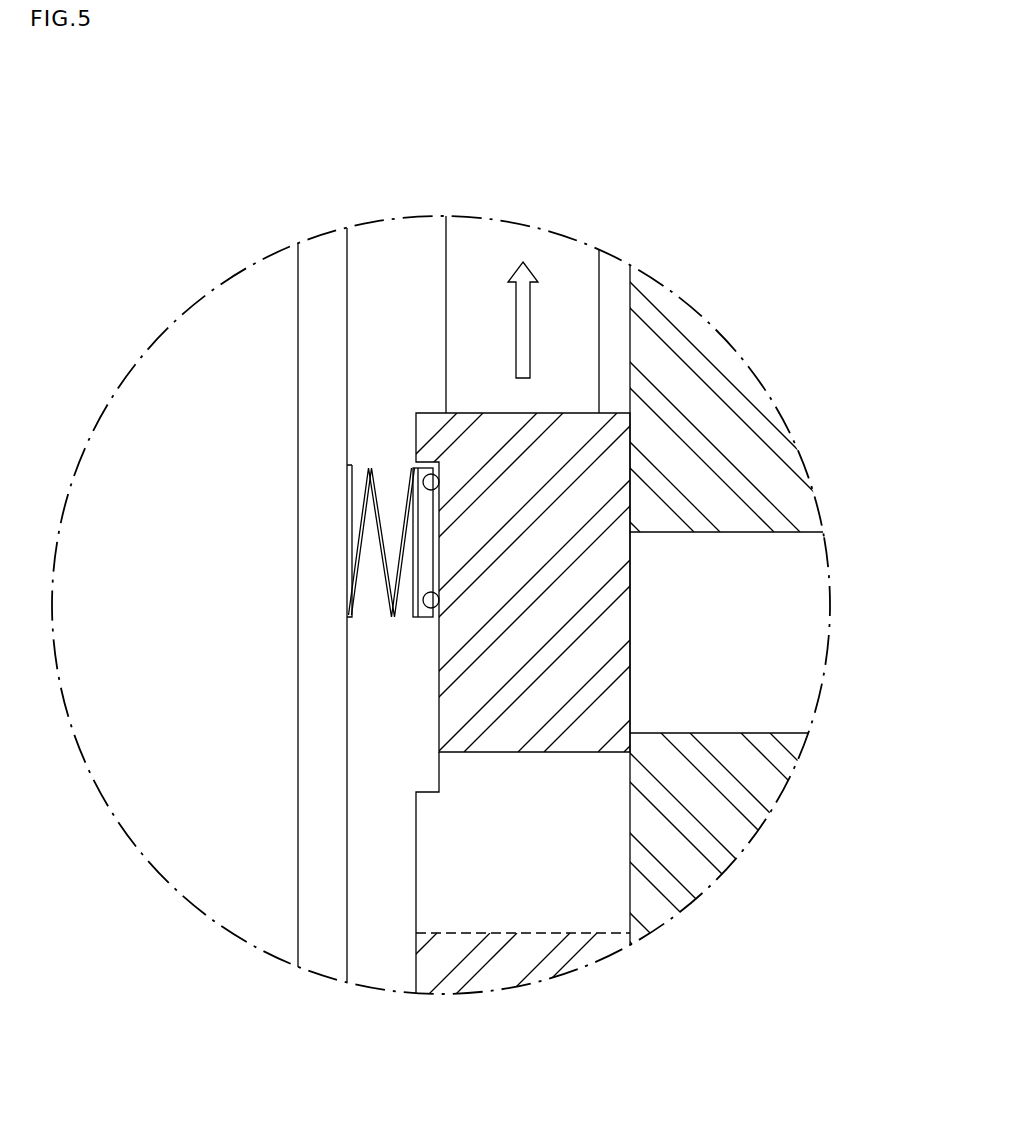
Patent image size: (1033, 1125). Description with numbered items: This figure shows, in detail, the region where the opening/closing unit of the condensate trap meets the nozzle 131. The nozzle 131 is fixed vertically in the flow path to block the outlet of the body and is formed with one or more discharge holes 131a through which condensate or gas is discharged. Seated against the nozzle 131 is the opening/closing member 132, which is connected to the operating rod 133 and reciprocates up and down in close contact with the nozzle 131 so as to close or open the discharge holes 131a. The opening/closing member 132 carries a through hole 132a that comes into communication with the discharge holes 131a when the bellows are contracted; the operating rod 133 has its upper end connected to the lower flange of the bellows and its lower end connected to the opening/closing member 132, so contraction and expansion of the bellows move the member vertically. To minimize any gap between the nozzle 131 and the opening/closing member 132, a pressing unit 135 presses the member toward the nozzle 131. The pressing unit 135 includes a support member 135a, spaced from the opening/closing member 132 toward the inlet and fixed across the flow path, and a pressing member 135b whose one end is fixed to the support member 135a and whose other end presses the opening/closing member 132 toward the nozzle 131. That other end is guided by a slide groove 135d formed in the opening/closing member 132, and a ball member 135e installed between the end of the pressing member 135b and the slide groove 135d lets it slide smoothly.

The nozzle 131 is at (718, 418).
The discharge holes 131a is at (737, 733).
The opening/closing member 132 is at (440, 873).
The through hole 132a is at (460, 933).
The operating rod 133 is at (495, 253).
The pressing unit 135 is at (288, 512).
The support member 135a is at (298, 383).
The pressing member 135b is at (391, 600).
The slide groove 135d is at (439, 692).
The ball member 135e is at (428, 607).